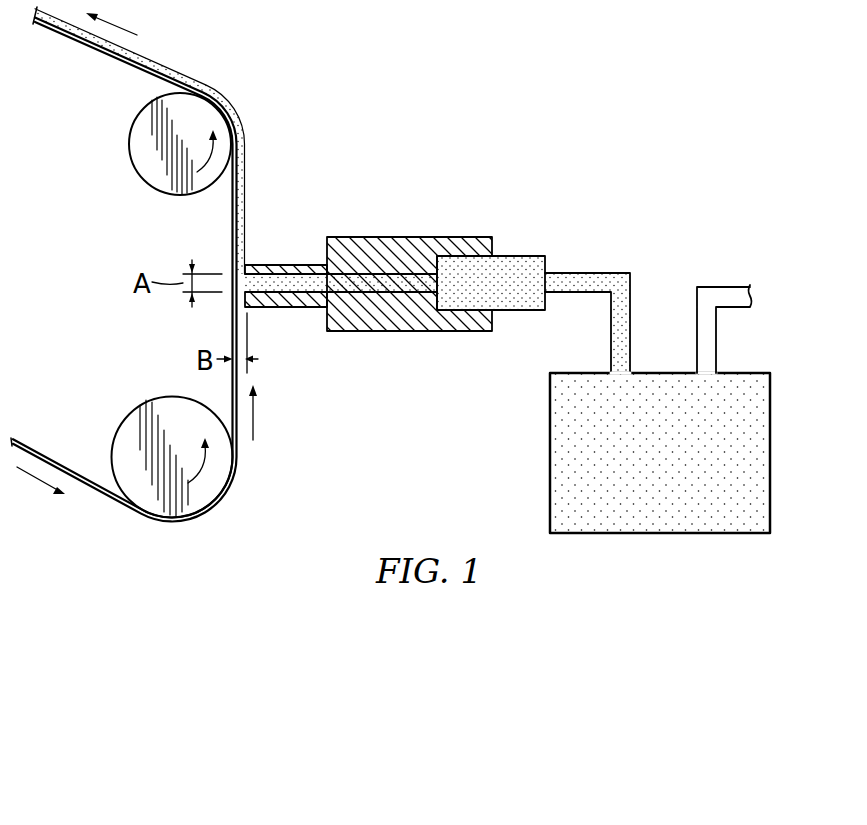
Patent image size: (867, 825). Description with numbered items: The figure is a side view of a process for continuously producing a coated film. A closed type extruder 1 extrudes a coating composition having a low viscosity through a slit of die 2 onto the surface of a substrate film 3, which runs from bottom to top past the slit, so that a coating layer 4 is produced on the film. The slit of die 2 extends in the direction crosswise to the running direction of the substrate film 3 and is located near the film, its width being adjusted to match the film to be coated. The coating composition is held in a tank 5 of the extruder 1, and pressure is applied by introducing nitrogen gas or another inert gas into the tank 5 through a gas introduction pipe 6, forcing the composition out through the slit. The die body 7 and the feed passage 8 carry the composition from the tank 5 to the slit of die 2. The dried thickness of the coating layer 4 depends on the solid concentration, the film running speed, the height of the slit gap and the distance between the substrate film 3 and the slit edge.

The extruder 1 is at (660, 252).
The slit of die 2 is at (252, 317).
The substrate film 3 is at (233, 477).
The coating layer 4 is at (245, 180).
The tank 5 is at (553, 457).
The gas introduction pipe 6 is at (712, 292).
The nozzle body 7 is at (388, 242).
The channel 8 is at (278, 280).